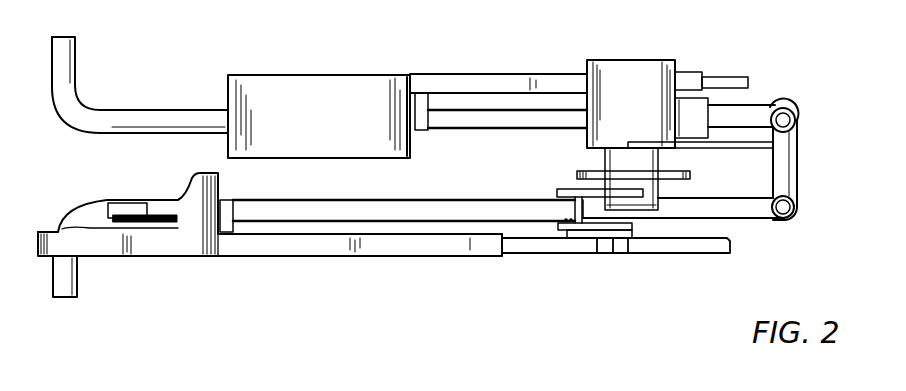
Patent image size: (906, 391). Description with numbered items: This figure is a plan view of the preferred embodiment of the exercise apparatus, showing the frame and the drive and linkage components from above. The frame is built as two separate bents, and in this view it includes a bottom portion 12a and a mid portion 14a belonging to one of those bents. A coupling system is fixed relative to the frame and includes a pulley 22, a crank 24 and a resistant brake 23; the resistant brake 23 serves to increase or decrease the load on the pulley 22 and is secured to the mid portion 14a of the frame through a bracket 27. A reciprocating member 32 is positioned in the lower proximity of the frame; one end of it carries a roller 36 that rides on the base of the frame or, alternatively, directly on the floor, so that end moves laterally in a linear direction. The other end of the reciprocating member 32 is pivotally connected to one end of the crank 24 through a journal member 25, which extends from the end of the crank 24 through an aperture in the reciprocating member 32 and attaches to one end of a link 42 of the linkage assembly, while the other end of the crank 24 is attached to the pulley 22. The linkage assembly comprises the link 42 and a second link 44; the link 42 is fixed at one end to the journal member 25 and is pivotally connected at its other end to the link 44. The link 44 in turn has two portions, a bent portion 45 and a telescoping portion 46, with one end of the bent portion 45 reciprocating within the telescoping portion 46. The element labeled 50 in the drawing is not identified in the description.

The bottom portion 12a is at (757, 112).
The mid portion 14a is at (800, 118).
The pulley 22 is at (690, 174).
The resistant brake 23 is at (643, 68).
The crank 24 is at (575, 189).
The journal member 25 is at (572, 226).
The bracket 27 is at (755, 148).
The reciprocating member 32 is at (467, 118).
The roller 36 is at (110, 203).
The link 42 is at (597, 232).
The link 44 is at (517, 246).
The bent portion 45 is at (703, 245).
The telescoping portion 46 is at (462, 80).
The block 50 is at (297, 85).